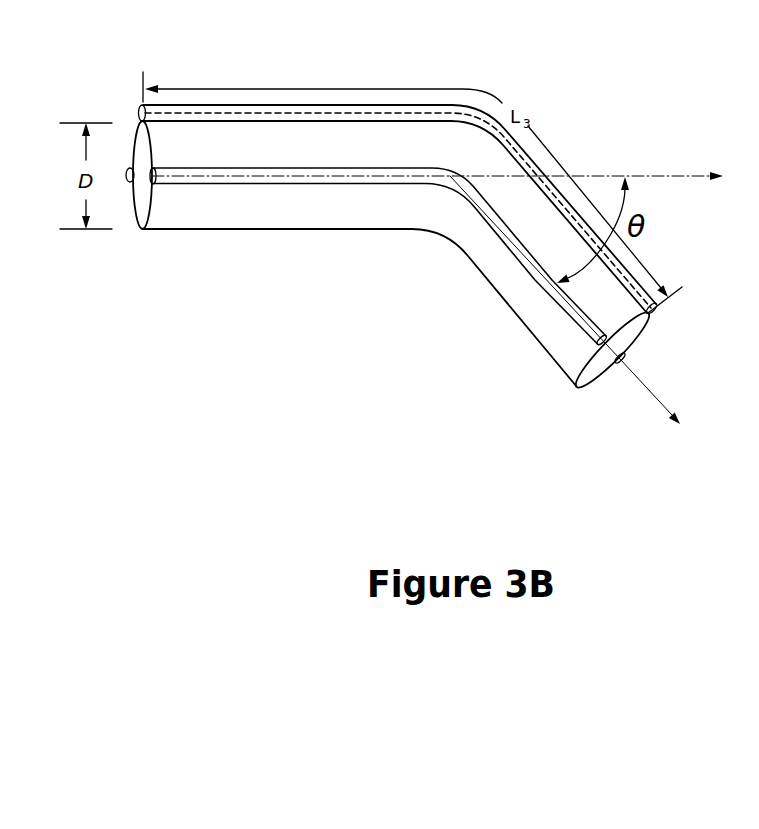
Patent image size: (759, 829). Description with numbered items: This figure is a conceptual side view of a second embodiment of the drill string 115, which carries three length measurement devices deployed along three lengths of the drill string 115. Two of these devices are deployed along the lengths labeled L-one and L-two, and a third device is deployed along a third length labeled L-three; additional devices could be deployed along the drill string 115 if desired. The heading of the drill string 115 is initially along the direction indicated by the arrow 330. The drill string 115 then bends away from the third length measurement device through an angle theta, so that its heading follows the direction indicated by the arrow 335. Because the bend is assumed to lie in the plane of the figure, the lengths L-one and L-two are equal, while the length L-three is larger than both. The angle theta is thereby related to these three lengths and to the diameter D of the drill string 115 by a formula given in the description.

The drill string 115 is at (375, 231).
The arrow indicating initial heading 330 is at (582, 175).
The arrow indicating heading after bend 335 is at (655, 398).